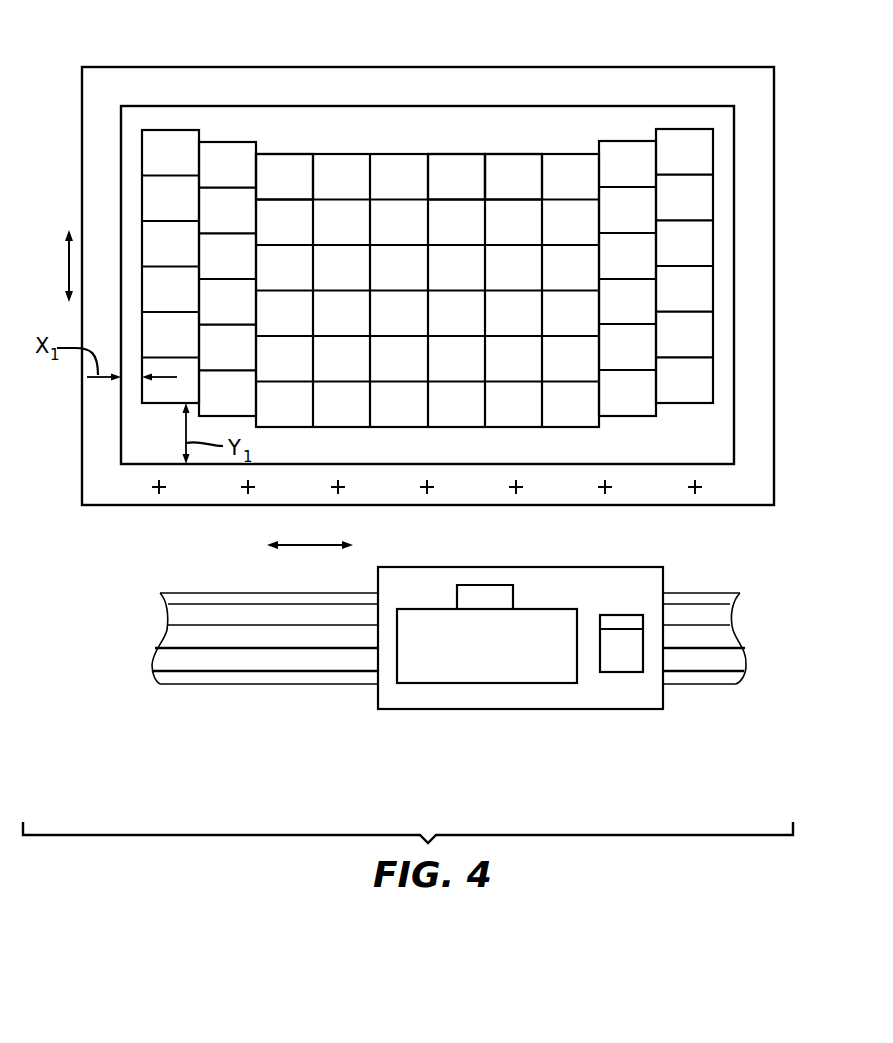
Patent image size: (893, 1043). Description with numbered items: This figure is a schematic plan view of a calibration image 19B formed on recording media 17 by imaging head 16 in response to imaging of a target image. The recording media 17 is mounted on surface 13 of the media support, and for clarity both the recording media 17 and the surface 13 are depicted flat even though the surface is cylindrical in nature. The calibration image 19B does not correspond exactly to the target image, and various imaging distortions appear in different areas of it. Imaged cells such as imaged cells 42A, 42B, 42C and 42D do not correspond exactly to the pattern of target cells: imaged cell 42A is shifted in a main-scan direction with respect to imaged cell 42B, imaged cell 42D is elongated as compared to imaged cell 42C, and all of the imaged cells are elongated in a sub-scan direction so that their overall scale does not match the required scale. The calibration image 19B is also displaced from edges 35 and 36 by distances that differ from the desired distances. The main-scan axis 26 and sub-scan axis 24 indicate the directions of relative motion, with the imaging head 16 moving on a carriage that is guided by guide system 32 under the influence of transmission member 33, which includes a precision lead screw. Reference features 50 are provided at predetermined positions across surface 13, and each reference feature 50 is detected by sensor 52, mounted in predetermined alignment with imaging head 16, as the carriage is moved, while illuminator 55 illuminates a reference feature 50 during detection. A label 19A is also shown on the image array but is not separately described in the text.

The surface 13 is at (92, 161).
The imaging head 16 is at (503, 683).
The recording media 17 is at (627, 115).
The central key array 19A is at (400, 154).
The calibration image 19B is at (694, 129).
The sub-scan axis 24 is at (310, 545).
The main-scan axis 26 is at (67, 266).
The guide system 32 is at (183, 600).
The transmission member 33 is at (250, 638).
The edge 35 is at (121, 407).
The edge 36 is at (134, 464).
The imaged cell 42A is at (227, 142).
The imaged cell 42B is at (285, 154).
The imaged cell 42C is at (457, 154).
The imaged cell 42D is at (513, 154).
The reference features 50 is at (692, 492).
The sensor 52 is at (630, 624).
The illuminator 55 is at (609, 662).